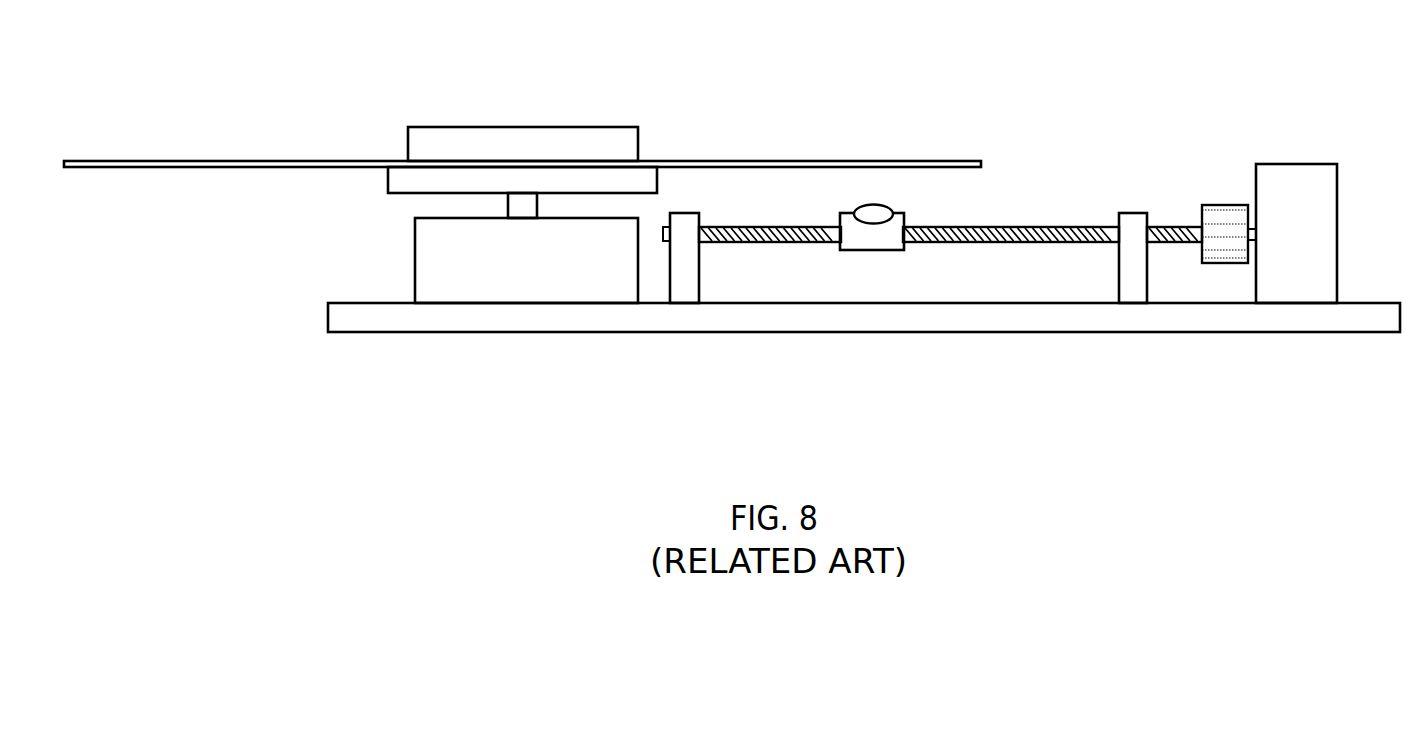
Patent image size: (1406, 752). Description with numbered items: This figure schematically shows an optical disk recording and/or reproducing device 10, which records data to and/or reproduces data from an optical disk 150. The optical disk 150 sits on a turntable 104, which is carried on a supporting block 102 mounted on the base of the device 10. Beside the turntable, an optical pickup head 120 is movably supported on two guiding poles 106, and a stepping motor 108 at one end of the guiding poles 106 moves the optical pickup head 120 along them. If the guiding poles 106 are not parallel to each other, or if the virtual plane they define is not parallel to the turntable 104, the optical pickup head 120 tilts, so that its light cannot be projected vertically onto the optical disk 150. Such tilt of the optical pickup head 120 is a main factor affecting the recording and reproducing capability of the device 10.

The optical disk recording and/or reproducing device 10 is at (1051, 92).
The stage base / drive block 102 is at (452, 257).
The turntable 104 is at (560, 147).
The guiding poles 106 is at (1035, 226).
The stepping motor 108 is at (1218, 205).
The optical pickup head 120 is at (895, 240).
The optical disk 150 is at (800, 161).